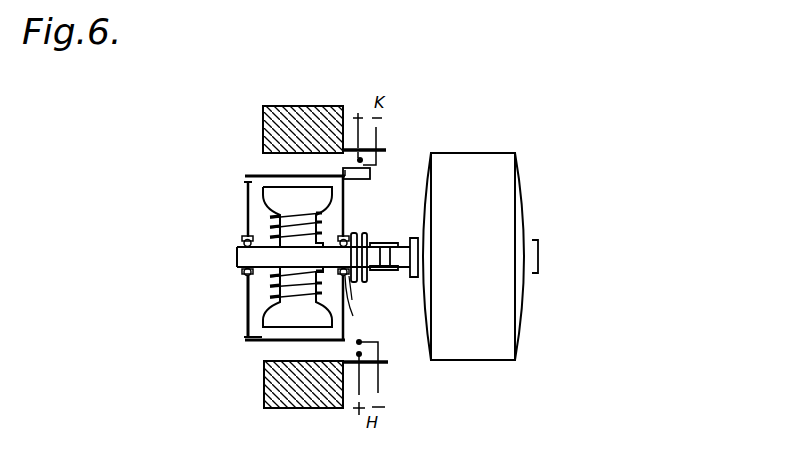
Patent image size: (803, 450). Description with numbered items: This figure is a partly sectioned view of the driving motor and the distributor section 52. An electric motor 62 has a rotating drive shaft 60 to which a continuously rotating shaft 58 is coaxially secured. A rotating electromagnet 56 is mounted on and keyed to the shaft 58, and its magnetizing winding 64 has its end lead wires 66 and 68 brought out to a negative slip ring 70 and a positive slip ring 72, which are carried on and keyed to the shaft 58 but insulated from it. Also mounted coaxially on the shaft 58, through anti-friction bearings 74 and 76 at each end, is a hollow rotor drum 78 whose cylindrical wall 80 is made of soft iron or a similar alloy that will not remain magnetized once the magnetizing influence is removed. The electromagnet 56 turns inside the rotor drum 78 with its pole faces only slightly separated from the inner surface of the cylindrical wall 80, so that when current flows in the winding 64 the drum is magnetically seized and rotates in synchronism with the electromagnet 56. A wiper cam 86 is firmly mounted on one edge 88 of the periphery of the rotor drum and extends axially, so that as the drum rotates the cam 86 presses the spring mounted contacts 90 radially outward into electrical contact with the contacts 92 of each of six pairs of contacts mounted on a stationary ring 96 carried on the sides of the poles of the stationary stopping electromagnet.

The distributor section 52 is at (247, 218).
The rotating electromagnet 56 is at (287, 319).
The continuously rotating shaft 58 is at (237, 258).
The rotating drive shaft 60 is at (412, 255).
The electric motor 62 is at (505, 205).
The magnetizing winding 64 is at (277, 287).
The end lead wire 66 is at (354, 232).
The end lead wire 68 is at (352, 298).
The negative slip ring 70 is at (365, 241).
The positive slip ring 72 is at (354, 283).
The anti-friction bearing 74 is at (240, 241).
The anti-friction bearing 76 is at (354, 316).
The rotor drum 78 is at (256, 341).
The cylindrical wall 80 is at (262, 176).
The wiper cam 86 is at (370, 172).
The edge of the periphery of the rotor drum 88 is at (347, 181).
The spring mounted contact 90 is at (385, 151).
The contact 92 is at (363, 160).
The stationary ring 96 is at (388, 362).